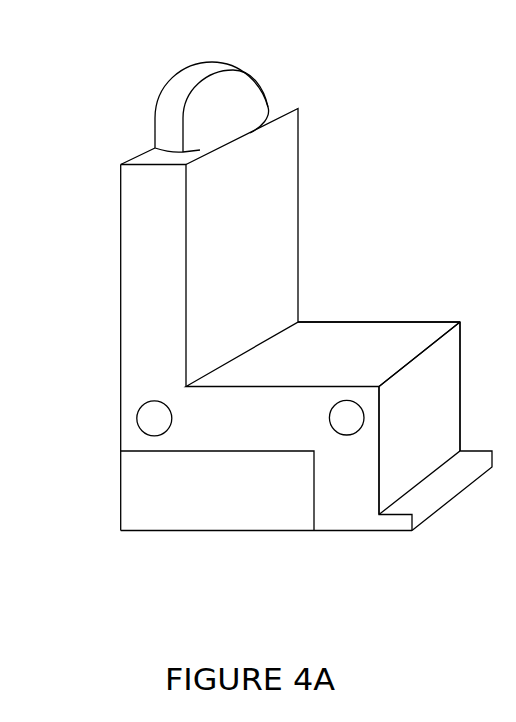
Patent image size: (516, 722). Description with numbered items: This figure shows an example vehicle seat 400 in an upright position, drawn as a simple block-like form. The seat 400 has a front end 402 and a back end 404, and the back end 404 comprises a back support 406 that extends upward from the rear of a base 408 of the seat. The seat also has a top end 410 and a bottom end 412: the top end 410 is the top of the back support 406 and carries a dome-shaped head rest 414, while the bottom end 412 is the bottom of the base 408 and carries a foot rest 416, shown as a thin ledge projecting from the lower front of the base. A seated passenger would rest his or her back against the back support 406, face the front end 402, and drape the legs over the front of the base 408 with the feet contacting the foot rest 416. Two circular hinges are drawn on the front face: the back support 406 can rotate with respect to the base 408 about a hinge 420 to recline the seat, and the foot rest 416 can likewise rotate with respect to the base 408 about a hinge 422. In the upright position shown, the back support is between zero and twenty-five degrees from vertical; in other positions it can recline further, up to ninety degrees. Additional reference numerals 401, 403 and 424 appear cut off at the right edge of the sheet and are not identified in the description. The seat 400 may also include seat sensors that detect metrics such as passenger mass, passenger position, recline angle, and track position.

The seat 400 is at (279, 335).
The side portion 401 is at (496, 415).
The front end 402 is at (515, 191).
The upper surface 403 is at (407, 284).
The back end 404 is at (251, 320).
The back support 406 is at (128, 297).
The base 408 is at (170, 528).
The top end 410 is at (257, 83).
The bottom end 412 is at (306, 531).
The head rest 414 is at (263, 97).
The foot rest 416 is at (403, 528).
The hinge 420 is at (137, 417).
The hinge 422 is at (343, 400).
The side surface 424 is at (447, 348).